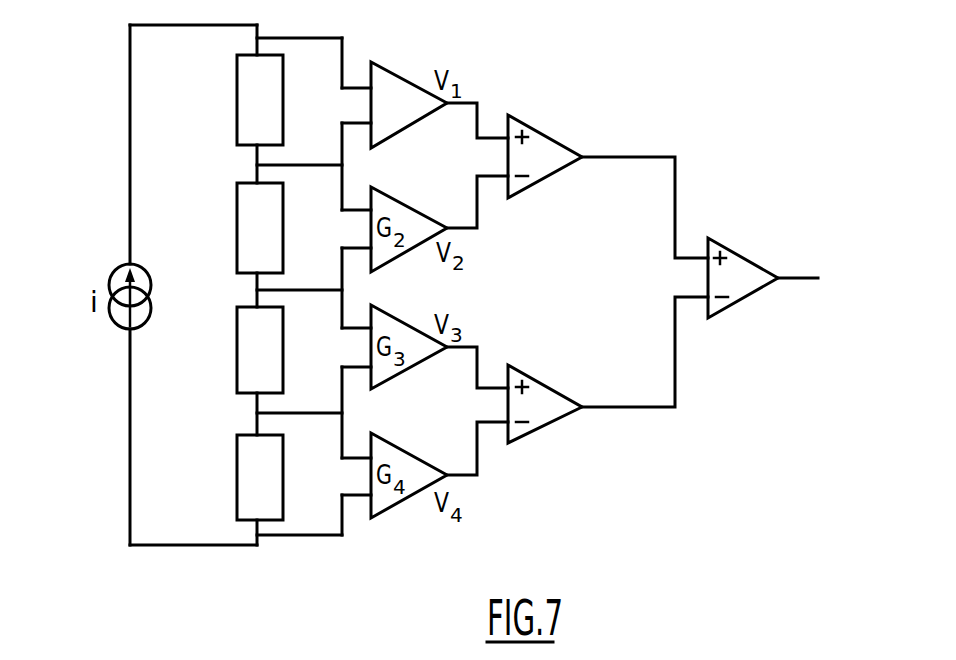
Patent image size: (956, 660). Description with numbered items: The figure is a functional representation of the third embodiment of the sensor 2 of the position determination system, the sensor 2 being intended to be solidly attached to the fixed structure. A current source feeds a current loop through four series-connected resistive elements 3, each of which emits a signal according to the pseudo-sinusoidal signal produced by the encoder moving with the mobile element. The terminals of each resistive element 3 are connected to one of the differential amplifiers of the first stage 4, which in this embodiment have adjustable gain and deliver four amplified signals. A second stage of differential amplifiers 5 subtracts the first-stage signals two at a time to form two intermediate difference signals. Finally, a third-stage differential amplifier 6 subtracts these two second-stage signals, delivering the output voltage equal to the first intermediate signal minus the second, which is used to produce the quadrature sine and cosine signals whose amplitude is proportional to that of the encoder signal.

The sensor 2 is at (646, 254).
The resistive element 3 is at (237, 115).
The first stage of differential amplifiers 4 is at (412, 78).
The second stage of differential amplifiers 5 is at (548, 423).
The third stage differential amplifier 6 is at (750, 295).